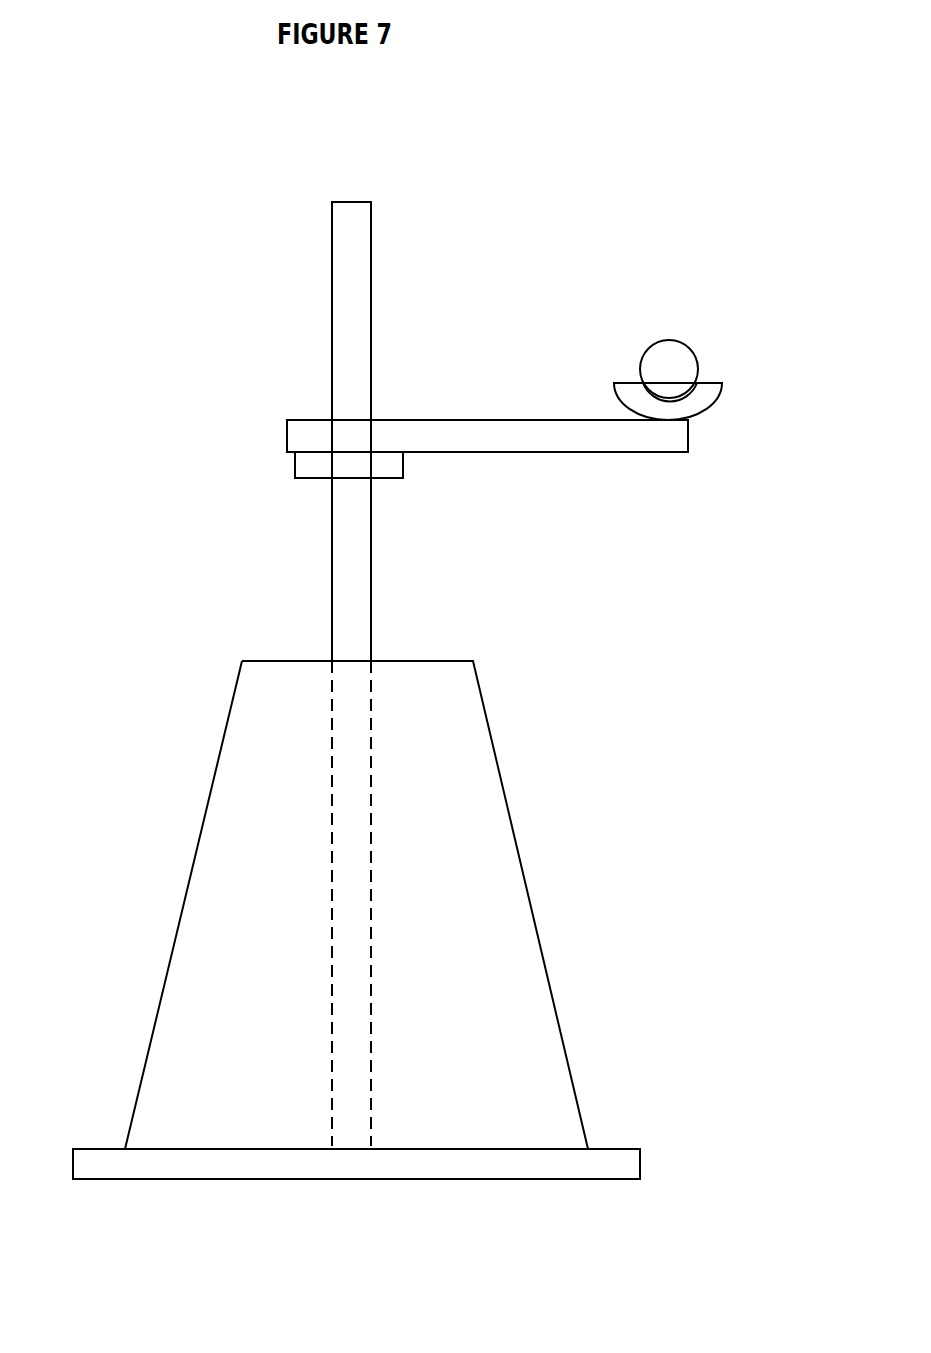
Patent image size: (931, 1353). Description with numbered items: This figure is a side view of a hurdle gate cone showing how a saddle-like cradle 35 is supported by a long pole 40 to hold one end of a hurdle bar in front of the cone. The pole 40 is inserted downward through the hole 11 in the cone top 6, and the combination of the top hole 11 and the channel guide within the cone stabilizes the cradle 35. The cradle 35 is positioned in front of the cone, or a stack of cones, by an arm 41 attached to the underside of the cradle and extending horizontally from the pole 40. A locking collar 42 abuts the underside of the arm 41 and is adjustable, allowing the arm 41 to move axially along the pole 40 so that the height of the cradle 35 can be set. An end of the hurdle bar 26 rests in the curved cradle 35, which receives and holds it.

The vertical pole 40 is at (343, 337).
The horizontal arm 41 is at (690, 432).
The clamp 42 is at (317, 464).
The cup holder 35 is at (630, 383).
The ball 26 is at (663, 353).
The conical stand 6 is at (270, 659).
The base plate 11 is at (347, 660).